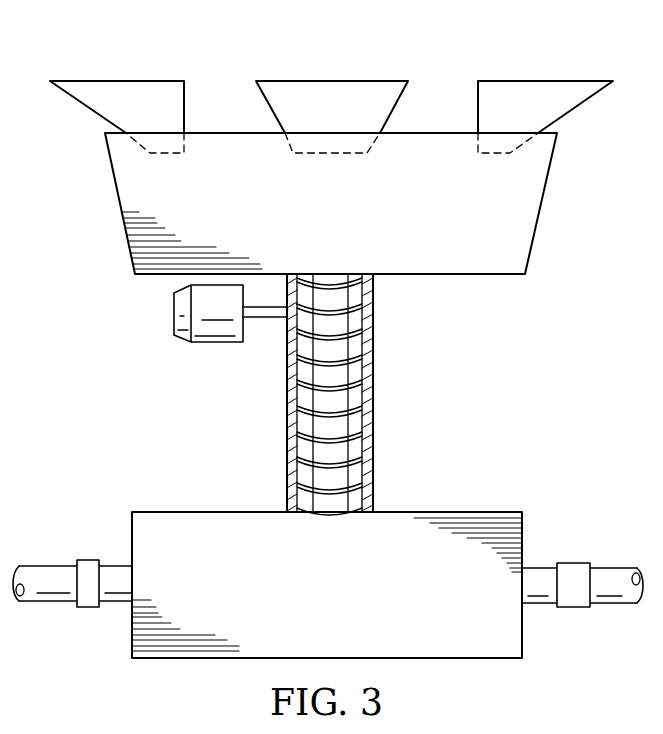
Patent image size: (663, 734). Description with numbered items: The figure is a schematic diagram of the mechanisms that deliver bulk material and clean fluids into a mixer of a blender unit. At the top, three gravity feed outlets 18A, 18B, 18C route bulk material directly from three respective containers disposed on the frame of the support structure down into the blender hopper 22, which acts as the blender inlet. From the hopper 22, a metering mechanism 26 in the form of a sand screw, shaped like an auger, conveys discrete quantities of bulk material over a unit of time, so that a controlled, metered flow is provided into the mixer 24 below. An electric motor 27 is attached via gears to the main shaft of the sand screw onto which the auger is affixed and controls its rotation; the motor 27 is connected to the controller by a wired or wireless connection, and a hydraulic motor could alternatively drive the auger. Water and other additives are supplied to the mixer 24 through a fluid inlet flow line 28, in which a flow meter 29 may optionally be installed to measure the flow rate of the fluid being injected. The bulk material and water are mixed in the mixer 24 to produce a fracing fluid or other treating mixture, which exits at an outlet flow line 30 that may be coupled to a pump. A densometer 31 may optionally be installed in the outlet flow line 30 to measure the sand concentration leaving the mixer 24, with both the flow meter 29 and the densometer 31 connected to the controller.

The gravity feed outlet 18A is at (117, 81).
The gravity feed outlet 18B is at (332, 81).
The gravity feed outlet 18C is at (546, 81).
The hopper 22 is at (542, 205).
The mixer 24 is at (203, 511).
The metering mechanism 26 is at (375, 392).
The electric motor 27 is at (174, 312).
The fluid inlet flow line 28 is at (49, 566).
The flow meter 29 is at (87, 607).
The outlet flow line 30 is at (611, 567).
The densometer 31 is at (570, 608).